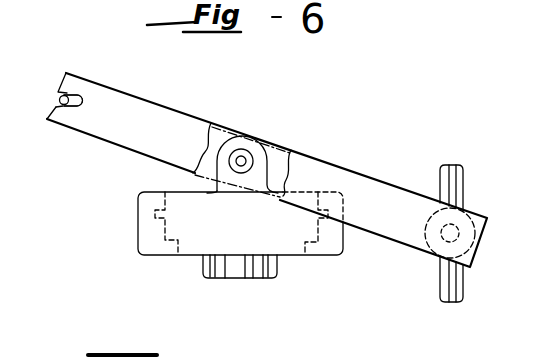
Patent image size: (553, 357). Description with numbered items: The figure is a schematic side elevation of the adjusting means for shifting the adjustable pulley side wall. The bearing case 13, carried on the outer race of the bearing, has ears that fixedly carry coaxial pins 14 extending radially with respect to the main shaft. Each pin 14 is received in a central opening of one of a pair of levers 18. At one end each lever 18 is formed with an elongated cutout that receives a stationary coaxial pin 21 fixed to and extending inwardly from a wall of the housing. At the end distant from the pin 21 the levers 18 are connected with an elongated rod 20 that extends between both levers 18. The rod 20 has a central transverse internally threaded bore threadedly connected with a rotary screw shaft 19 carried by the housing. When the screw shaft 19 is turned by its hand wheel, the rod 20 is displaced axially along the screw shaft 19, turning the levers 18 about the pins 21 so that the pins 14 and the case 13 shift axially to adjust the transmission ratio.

The bearing case 13 is at (138, 213).
The coaxial pins 14 is at (241, 152).
The levers 18 is at (147, 103).
The rotary screw shaft 19 is at (463, 187).
The elongated rod 20 is at (461, 232).
The stationary coaxial pins 21 is at (63, 107).